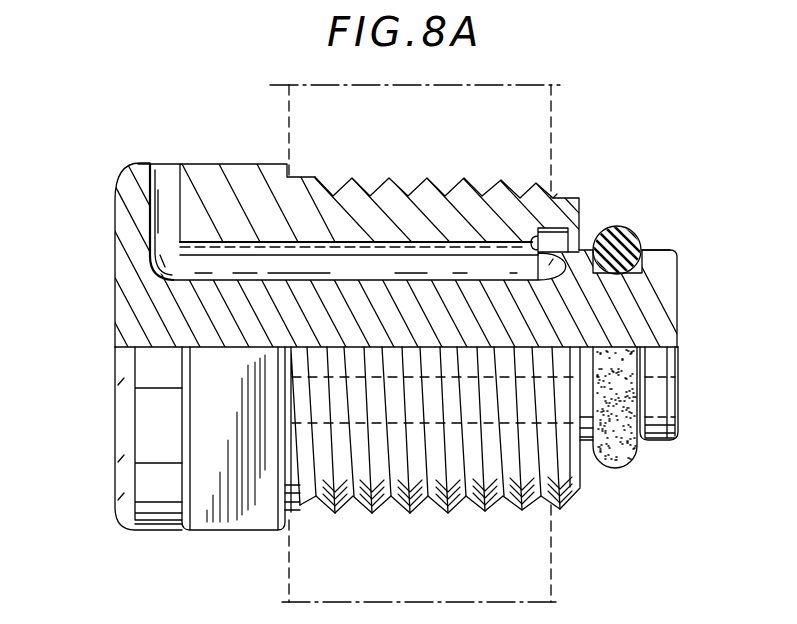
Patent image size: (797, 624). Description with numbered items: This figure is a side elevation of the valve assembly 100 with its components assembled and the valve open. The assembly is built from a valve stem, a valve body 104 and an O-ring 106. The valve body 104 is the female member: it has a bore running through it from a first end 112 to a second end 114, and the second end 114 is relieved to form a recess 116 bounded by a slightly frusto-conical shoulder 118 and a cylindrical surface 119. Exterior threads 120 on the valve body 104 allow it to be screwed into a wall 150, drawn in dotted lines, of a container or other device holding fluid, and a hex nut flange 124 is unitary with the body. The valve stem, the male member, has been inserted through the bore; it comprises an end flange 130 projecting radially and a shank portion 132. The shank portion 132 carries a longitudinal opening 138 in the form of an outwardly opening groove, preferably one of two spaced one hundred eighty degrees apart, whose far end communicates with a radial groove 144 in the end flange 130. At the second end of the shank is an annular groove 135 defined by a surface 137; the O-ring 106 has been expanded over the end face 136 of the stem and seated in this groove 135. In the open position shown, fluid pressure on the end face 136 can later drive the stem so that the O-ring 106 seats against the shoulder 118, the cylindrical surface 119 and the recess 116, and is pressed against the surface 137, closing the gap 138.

The valve assembly 100 is at (560, 190).
The valve body 104 is at (393, 510).
The O-ring 106 is at (642, 238).
The first end 112 is at (177, 217).
The second end 114 is at (579, 205).
The recess 116 is at (588, 244).
The shoulder 118 is at (534, 233).
The cylindrical surface 119 is at (554, 195).
The exterior threads 120 is at (440, 510).
The hex nut flange 124 is at (240, 513).
The end flange 130 is at (115, 273).
The shank portion 132 is at (418, 288).
The annular groove 135 is at (622, 278).
The end face 136 is at (660, 402).
The surface 137 is at (677, 262).
The longitudinal opening 138 is at (384, 273).
The radial groove 144 is at (163, 180).
The wall 150 is at (550, 120).